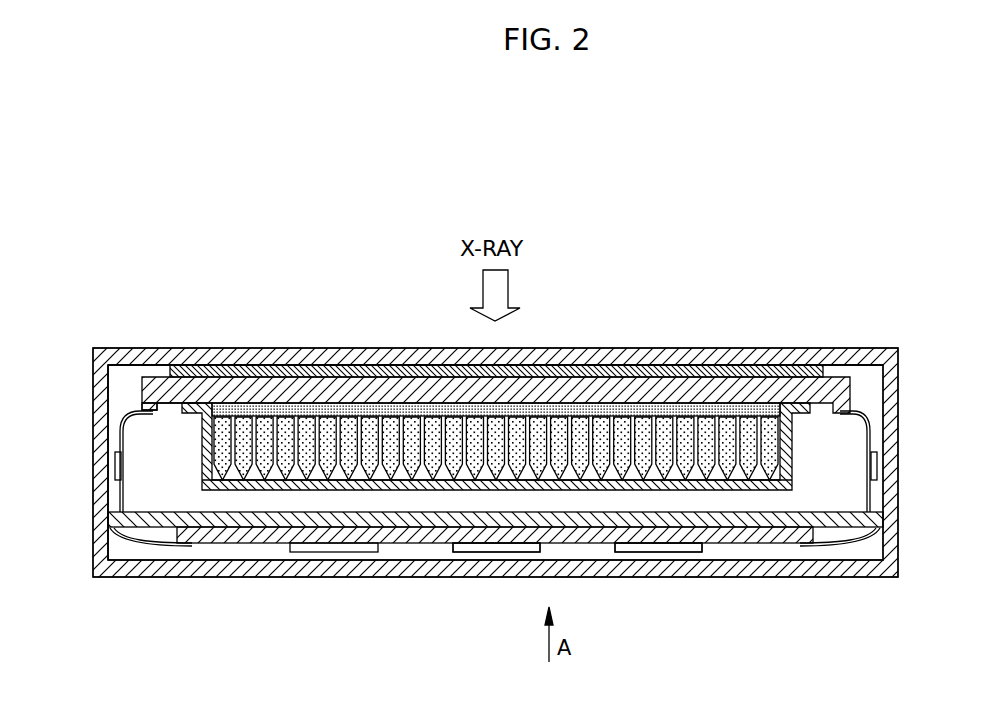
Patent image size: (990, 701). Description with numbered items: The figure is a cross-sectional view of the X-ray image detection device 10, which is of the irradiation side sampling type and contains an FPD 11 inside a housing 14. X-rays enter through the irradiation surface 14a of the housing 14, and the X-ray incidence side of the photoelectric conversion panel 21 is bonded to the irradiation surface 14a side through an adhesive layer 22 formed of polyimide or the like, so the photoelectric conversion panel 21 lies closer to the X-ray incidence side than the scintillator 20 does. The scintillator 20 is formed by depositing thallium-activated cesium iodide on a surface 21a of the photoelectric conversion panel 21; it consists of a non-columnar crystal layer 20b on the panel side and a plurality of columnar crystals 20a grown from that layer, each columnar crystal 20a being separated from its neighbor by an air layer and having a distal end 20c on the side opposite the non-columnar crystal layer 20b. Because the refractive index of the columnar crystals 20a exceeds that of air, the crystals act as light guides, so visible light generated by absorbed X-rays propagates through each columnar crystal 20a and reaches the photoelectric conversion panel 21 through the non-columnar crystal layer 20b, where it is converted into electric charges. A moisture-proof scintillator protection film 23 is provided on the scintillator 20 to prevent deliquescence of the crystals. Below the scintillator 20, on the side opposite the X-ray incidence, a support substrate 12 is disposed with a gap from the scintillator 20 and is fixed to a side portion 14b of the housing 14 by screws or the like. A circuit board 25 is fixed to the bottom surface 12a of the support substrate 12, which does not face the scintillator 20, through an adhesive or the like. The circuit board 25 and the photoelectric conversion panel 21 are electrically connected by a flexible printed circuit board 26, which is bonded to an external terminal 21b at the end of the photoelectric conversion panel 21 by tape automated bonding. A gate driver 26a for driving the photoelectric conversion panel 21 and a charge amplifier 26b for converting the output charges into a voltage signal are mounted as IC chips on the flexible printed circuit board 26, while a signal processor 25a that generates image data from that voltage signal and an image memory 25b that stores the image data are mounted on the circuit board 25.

The X-ray image detection device 10 is at (857, 323).
The FPD 11 is at (865, 397).
The support substrate 12 is at (877, 516).
The bottom surface 12a is at (870, 537).
The housing 14 is at (140, 358).
The irradiation surface 14a is at (290, 348).
The side portion 14b is at (102, 500).
The scintillator 20 is at (584, 446).
The columnar crystals 20a is at (772, 448).
The non-columnar crystal layer 20b is at (783, 415).
The distal end 20c is at (775, 463).
The photoelectric conversion panel 21 is at (672, 390).
The surface 21a is at (153, 411).
The external terminal 21b is at (150, 408).
The adhesive layer 22 is at (387, 372).
The scintillator protection film 23 is at (202, 479).
The circuit board 25 is at (420, 536).
The signal processor 25a is at (497, 548).
The image memory 25b is at (660, 548).
The flexible printed circuit board 26 is at (121, 430).
The gate driver 26a is at (116, 467).
The charge amplifier 26b is at (876, 467).